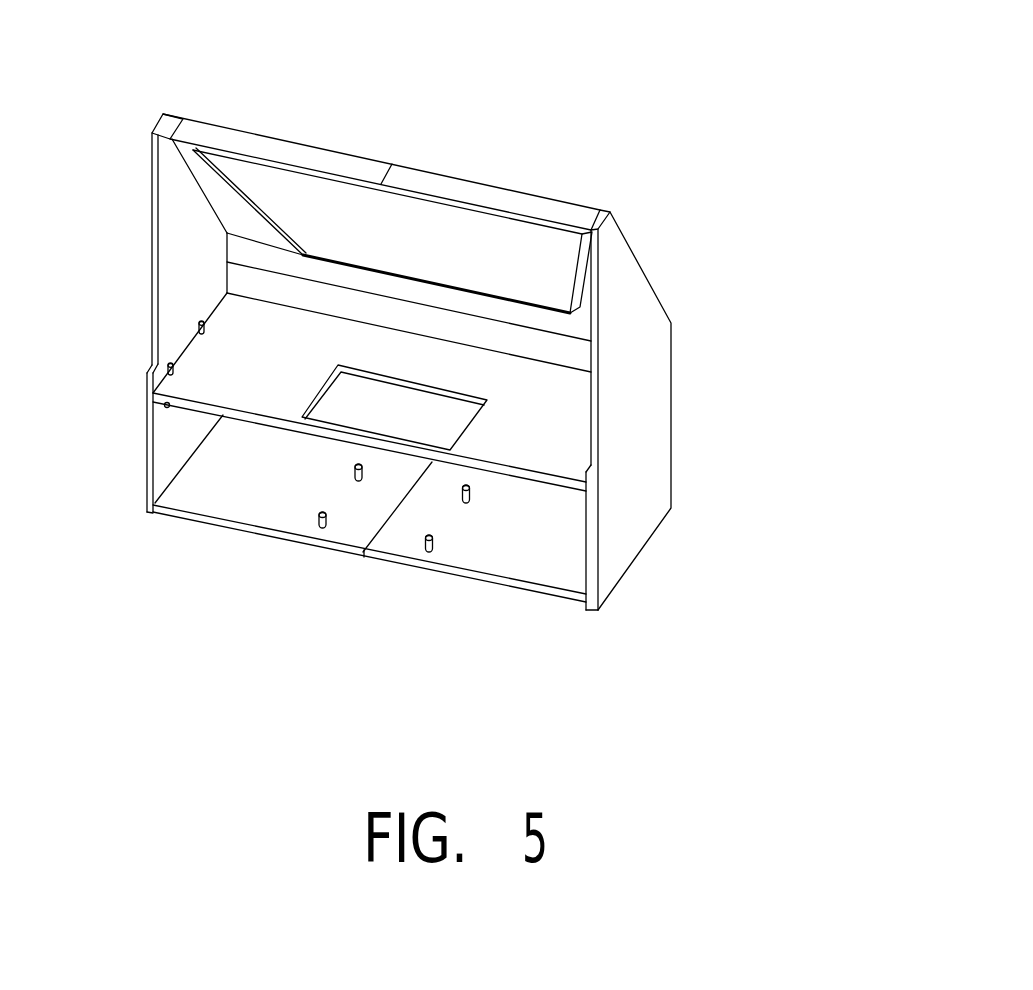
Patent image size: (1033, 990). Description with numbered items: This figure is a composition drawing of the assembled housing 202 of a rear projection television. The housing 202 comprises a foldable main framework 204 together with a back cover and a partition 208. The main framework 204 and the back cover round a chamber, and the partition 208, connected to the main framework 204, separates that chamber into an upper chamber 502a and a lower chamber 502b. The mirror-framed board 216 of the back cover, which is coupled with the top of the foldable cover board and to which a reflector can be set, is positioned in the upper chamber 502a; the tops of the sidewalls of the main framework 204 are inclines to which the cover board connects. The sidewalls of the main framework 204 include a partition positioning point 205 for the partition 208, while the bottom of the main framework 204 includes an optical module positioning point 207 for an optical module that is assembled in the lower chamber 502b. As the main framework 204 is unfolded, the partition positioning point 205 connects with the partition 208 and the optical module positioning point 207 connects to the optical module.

The housing 202 is at (708, 113).
The main framework 204 is at (637, 397).
The partition positioning point 205 is at (168, 360).
The optical module positioning point 207 is at (322, 528).
The partition 208 is at (258, 385).
The mirror-framed board 216 is at (256, 178).
The upper chamber 502a is at (528, 430).
The lower chamber 502b is at (293, 503).